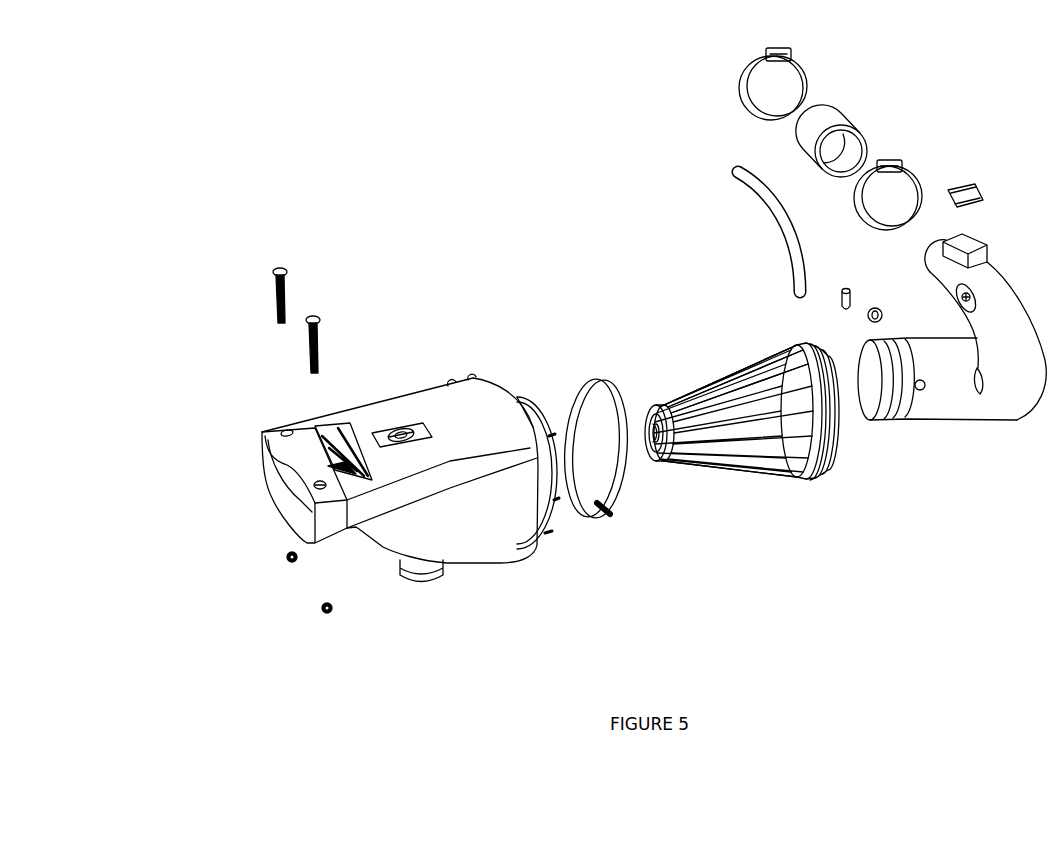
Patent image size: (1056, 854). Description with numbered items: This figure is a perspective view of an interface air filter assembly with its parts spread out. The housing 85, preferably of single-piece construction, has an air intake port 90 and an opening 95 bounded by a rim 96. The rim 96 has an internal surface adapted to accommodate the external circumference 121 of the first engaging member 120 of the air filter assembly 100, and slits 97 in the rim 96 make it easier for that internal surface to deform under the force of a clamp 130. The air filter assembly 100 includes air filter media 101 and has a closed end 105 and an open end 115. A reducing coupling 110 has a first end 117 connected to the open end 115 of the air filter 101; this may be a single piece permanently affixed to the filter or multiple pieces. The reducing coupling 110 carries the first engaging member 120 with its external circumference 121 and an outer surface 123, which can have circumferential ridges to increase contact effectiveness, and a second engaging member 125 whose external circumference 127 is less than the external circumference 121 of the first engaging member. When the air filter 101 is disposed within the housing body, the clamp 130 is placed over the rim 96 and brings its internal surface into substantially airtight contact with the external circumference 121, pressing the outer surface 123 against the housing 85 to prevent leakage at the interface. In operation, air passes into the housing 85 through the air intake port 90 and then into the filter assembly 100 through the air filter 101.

The housing 85 is at (386, 404).
The air intake port 90 is at (270, 495).
The opening 95 is at (540, 403).
The rim 96 is at (550, 537).
The slits 97 is at (558, 507).
The air filter assembly 100 is at (748, 477).
The air filter media 101 is at (729, 371).
The closed end 105 is at (666, 468).
The reducing coupling 110 is at (830, 473).
The open end 115 is at (837, 422).
The first end 117 is at (803, 478).
The first engaging member 120 is at (778, 345).
The external circumference 121 is at (721, 291).
The outer surface 123 is at (724, 303).
The second engaging member 125 is at (838, 443).
The external circumference 127 is at (925, 457).
The clamp 130 is at (613, 527).